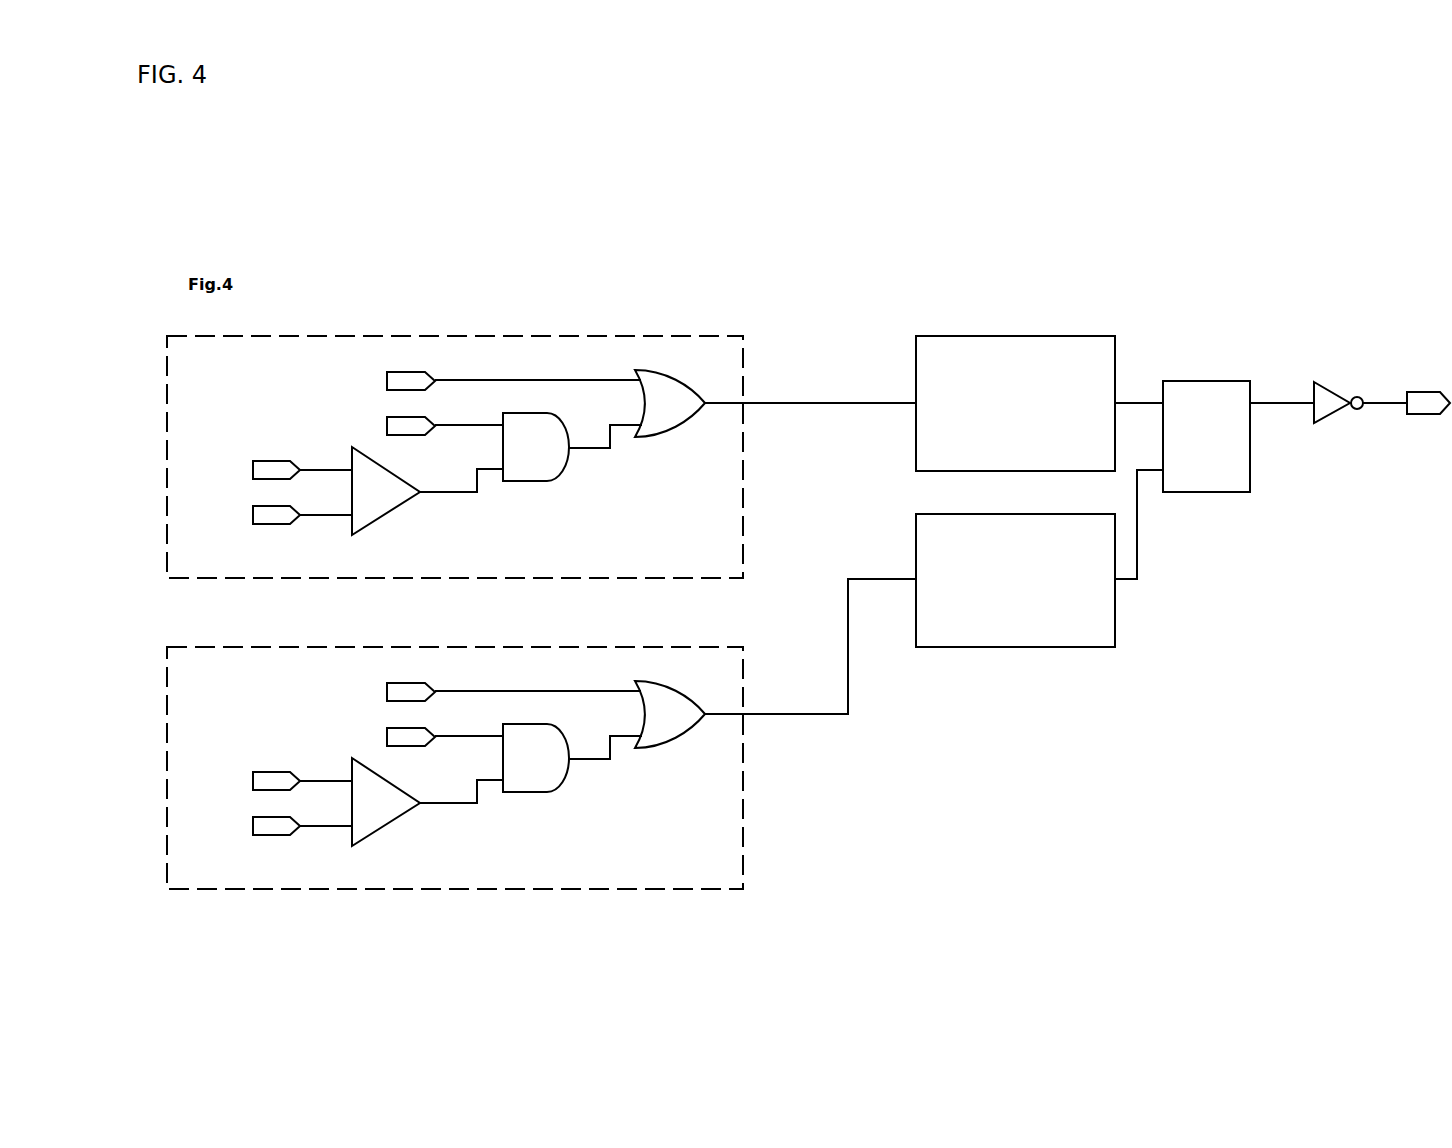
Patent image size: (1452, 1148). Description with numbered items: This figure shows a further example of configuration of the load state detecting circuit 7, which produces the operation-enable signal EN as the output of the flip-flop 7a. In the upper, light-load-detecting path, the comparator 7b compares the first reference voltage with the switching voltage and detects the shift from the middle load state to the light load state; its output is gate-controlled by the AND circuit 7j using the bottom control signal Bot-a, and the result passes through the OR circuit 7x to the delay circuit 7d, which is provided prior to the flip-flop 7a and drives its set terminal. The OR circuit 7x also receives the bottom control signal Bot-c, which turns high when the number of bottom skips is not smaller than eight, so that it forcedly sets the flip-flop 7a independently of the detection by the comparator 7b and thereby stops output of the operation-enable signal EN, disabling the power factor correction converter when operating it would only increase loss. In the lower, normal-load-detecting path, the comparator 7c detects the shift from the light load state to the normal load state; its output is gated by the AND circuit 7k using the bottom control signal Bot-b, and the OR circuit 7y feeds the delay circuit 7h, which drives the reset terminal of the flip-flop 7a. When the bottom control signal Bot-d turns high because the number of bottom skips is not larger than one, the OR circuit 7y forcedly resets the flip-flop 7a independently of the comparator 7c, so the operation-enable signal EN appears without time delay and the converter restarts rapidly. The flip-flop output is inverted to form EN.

The load state detecting circuit 7 is at (827, 308).
The flip-flop 7a is at (1218, 381).
The comparator 7b is at (393, 518).
The comparator 7c is at (393, 829).
The delay circuit 7d is at (1063, 336).
The delay circuit 7h is at (1027, 647).
The AND circuit 7j is at (517, 481).
The AND circuit 7k is at (517, 792).
The OR circuit 7x is at (653, 437).
The OR circuit 7y is at (653, 748).